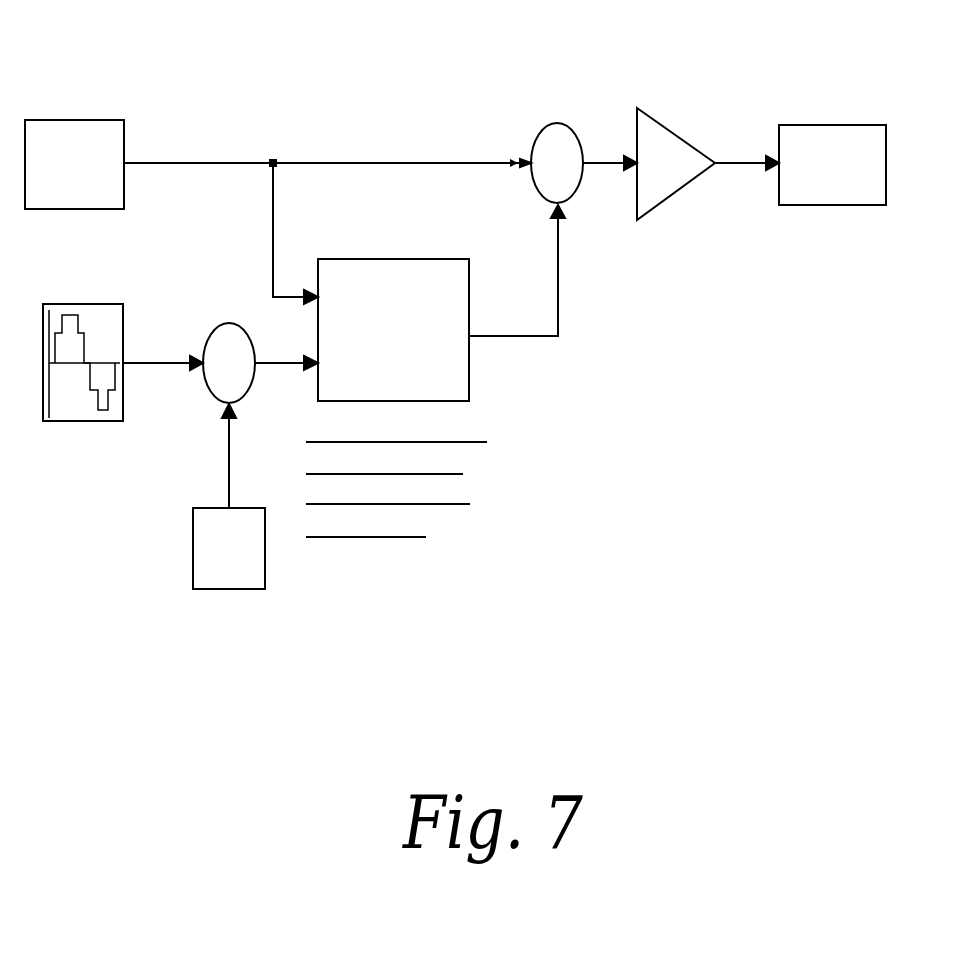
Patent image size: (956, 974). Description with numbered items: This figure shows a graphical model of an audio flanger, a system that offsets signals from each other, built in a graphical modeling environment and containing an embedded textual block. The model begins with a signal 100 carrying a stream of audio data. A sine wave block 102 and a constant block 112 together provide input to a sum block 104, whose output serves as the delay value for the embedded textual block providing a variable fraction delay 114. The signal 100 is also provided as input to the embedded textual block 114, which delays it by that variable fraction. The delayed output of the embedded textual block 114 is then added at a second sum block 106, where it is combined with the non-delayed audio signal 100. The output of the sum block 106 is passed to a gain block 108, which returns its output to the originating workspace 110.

The signal 100 is at (95, 97).
The sine wave block 102 is at (101, 497).
The sum block 104 is at (241, 310).
The sum block 106 is at (573, 112).
The gain block 108 is at (673, 98).
The originating workspace 110 is at (839, 112).
The constant block 112 is at (241, 645).
The embedded textual block providing a variable fraction delay 114 is at (362, 247).